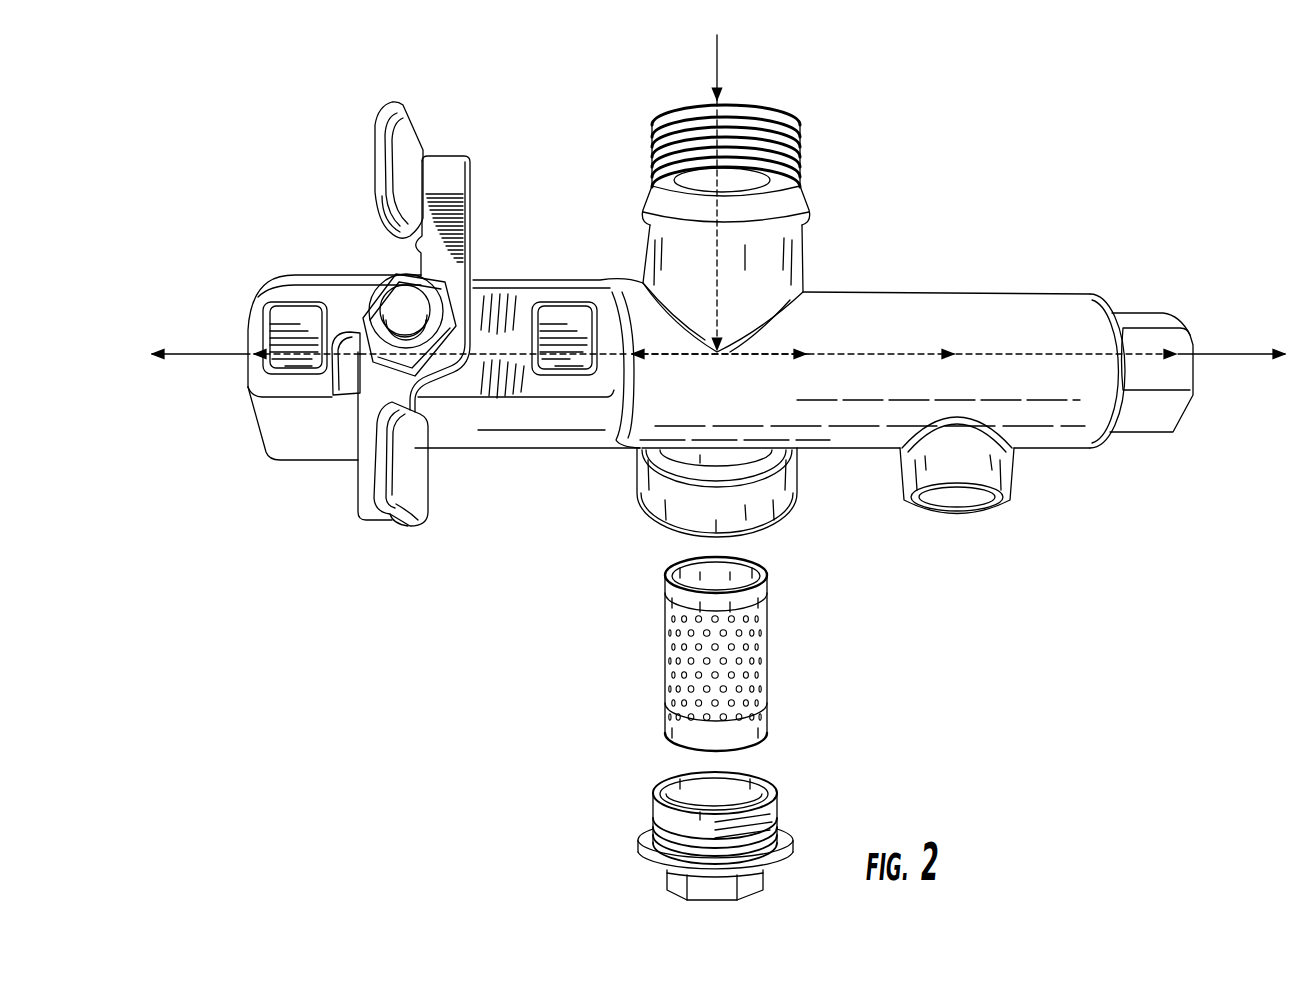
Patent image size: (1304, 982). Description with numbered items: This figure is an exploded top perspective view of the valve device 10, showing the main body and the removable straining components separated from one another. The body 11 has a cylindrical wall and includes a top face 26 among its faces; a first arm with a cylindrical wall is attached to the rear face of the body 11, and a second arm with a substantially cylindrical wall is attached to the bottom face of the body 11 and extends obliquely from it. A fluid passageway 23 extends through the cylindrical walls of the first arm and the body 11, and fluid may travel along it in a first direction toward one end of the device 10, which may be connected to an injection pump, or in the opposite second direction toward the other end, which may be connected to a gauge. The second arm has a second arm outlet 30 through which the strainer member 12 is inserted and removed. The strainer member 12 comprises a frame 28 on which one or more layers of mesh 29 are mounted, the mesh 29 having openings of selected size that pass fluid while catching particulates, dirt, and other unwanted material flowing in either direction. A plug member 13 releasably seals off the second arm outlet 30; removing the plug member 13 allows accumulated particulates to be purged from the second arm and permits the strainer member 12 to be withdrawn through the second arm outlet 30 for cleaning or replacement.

The valve device 10 is at (968, 210).
The body 11 is at (960, 312).
The strainer member 12 is at (778, 686).
The plug member 13 is at (800, 827).
The fluid passageway 23 is at (717, 70).
The top face 26 is at (830, 302).
The frame 28 is at (668, 592).
The mesh 29 is at (742, 662).
The second arm outlet 30 is at (665, 540).